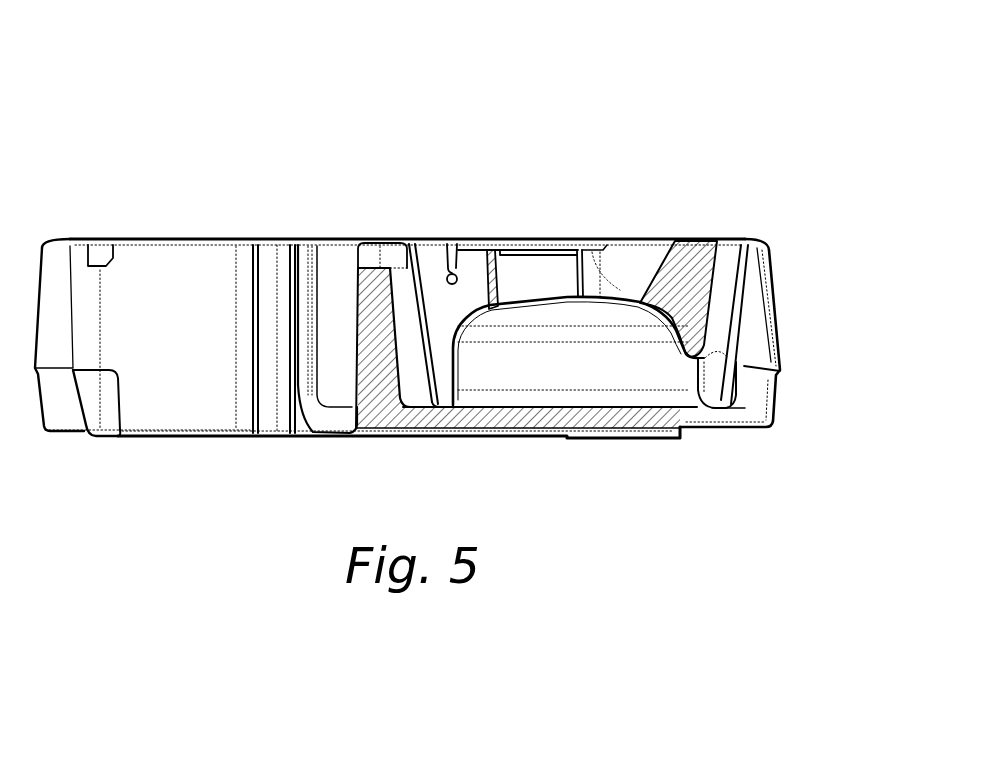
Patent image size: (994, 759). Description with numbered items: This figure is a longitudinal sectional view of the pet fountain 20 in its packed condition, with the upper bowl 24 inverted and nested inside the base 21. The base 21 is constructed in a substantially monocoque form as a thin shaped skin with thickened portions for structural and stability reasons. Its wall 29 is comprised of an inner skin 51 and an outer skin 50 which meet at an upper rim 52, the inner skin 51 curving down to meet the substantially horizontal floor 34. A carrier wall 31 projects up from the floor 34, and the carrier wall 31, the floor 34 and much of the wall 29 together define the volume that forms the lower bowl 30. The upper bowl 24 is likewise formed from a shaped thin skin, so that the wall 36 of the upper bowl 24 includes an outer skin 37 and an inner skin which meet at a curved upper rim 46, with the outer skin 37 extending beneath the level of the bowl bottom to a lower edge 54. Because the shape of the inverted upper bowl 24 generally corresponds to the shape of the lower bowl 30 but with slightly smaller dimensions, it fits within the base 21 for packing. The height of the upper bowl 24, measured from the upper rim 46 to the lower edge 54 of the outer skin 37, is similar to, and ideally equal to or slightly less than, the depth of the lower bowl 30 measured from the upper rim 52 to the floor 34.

The pet fountain 20 is at (388, 178).
The base 21 is at (217, 443).
The upper bowl 24 is at (695, 382).
The wall 29 is at (747, 313).
The lower bowl 30 is at (608, 382).
The carrier wall 31 is at (355, 352).
The floor 34 is at (546, 405).
The wall of the upper bowl 36 is at (438, 368).
The outer skin 37 is at (425, 328).
The upper rim 46 is at (733, 403).
The outer skin 50 is at (782, 332).
The inner skin 51 is at (747, 380).
The upper rim 52 is at (767, 238).
The lower edge 54 is at (638, 238).